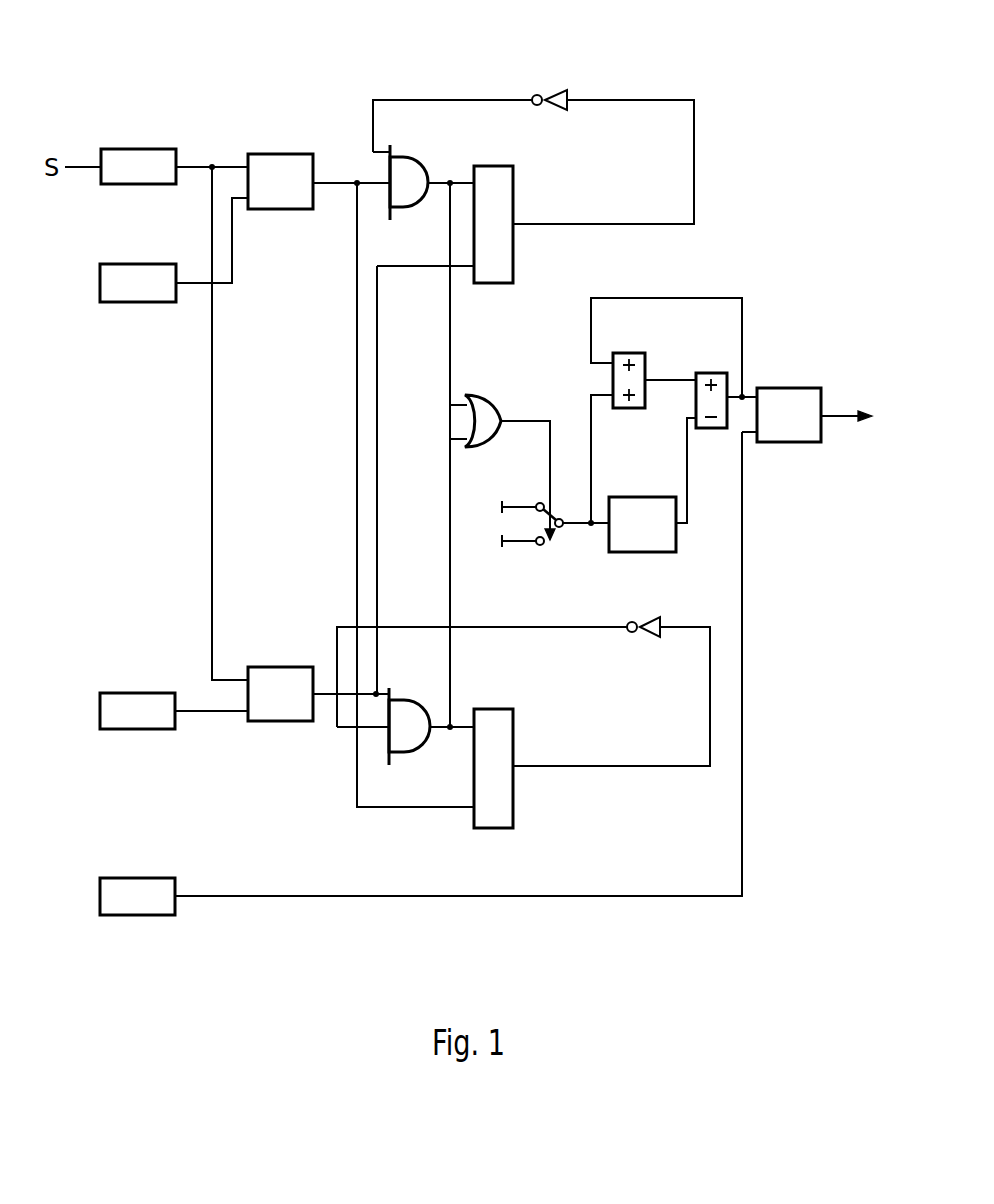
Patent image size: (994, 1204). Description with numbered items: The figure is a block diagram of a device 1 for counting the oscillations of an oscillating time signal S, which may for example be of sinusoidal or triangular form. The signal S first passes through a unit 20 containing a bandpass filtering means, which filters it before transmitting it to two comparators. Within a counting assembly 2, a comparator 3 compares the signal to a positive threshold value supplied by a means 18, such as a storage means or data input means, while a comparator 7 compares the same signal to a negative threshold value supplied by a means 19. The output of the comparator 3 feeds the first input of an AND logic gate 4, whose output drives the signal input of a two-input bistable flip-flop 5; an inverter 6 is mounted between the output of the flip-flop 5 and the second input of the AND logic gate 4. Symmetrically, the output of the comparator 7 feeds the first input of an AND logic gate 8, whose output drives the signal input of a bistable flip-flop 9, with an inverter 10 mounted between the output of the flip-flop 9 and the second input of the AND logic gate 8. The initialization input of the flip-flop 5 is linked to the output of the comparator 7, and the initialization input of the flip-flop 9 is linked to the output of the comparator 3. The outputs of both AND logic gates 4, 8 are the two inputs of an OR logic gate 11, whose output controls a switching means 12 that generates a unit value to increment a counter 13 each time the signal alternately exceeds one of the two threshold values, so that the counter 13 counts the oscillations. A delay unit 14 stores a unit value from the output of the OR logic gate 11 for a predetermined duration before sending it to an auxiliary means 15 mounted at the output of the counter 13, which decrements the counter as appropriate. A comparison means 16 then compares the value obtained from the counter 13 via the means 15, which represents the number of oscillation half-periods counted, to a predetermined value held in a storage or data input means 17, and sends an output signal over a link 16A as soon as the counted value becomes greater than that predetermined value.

The counting device 1 is at (148, 72).
The counting assembly 2 is at (340, 130).
The comparator 3 is at (280, 209).
The AND logic gate 4 is at (410, 157).
The bistable flip-flop 5 is at (513, 250).
The inverter 6 is at (566, 110).
The comparator 7 is at (280, 721).
The AND logic gate 8 is at (420, 752).
The bistable flip-flop 9 is at (513, 735).
The inverter 10 is at (656, 637).
The OR logic gate 11 is at (490, 394).
The switching means 12 is at (522, 555).
The counter 13 is at (630, 408).
The delay unit 14 is at (648, 552).
The auxiliary means 15 is at (712, 428).
The comparison means 16 is at (790, 442).
The link 16A is at (835, 412).
The storage or data input means 17 is at (136, 915).
The means 18 is at (146, 302).
The means 19 is at (138, 729).
The filtering unit 20 is at (148, 149).